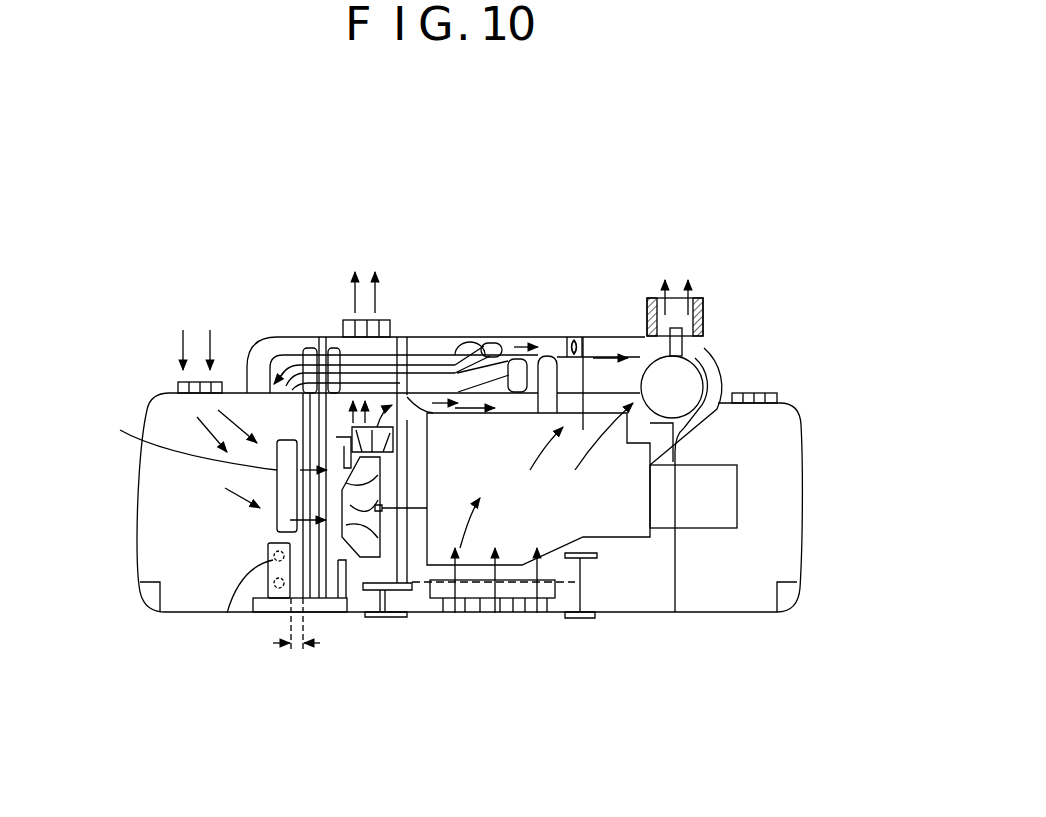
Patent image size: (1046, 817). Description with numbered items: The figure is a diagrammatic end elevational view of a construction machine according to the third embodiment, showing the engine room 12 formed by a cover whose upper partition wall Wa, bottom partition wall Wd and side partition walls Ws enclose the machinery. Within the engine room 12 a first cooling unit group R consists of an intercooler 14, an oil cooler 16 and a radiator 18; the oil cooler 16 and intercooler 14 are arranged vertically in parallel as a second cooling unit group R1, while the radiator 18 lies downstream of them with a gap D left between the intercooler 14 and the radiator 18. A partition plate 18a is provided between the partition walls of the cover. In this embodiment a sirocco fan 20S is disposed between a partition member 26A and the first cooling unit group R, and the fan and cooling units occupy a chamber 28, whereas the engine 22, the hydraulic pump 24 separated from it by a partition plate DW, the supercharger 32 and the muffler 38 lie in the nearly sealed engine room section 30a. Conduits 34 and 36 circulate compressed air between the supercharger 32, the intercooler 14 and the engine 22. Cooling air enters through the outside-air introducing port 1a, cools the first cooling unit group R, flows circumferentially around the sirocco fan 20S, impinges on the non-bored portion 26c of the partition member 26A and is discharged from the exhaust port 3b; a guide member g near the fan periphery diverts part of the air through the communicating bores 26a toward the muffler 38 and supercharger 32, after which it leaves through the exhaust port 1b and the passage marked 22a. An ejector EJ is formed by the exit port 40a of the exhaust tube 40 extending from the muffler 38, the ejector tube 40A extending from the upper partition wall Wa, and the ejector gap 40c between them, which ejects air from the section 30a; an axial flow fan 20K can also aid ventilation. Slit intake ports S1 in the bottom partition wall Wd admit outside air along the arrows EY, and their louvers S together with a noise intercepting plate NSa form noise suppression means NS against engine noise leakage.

The outside-air introducing port 1a is at (180, 380).
The exhaust port 1b is at (783, 407).
The exhaust port 3b is at (343, 318).
The engine room 12 is at (637, 325).
The intercooler 14 is at (230, 613).
The oil cooler 16 is at (120, 430).
The radiator 18 is at (244, 385).
The partition plate 18a is at (320, 337).
The axial flow fan 20K is at (566, 337).
The sirocco fan 20S is at (400, 473).
The engine 22 is at (588, 340).
The passage outlet 22a is at (787, 405).
The hydraulic pump 24 is at (737, 497).
The partition member 26A is at (400, 337).
The communicating bores 26a is at (420, 432).
The non-bored portion 26c is at (412, 567).
The chamber 28 is at (172, 502).
The nearly sealed engine room section 30a is at (617, 337).
The supercharger 32 is at (547, 354).
The conduit 34 is at (488, 343).
The conduit 36 is at (427, 367).
The muffler 38 is at (680, 390).
The exhaust tube 40 is at (705, 337).
The ejector tube 40A is at (652, 296).
The exit port 40a is at (682, 330).
The ejector gap 40c is at (710, 343).
The gap D is at (296, 641).
The partition plate DW is at (678, 585).
The ejector EJ is at (740, 305).
The arrows EY is at (560, 478).
The noise suppression means NS is at (612, 680).
The noise intercepting plate NSa is at (510, 580).
The first cooling unit group R is at (270, 620).
The second cooling unit group R1 is at (247, 540).
The louver S is at (443, 612).
The slit intake port S1 is at (465, 612).
The upper partition wall Wa is at (452, 355).
The bottom partition wall Wd is at (617, 613).
The side partition wall Ws is at (137, 529).
The guide member g is at (338, 431).